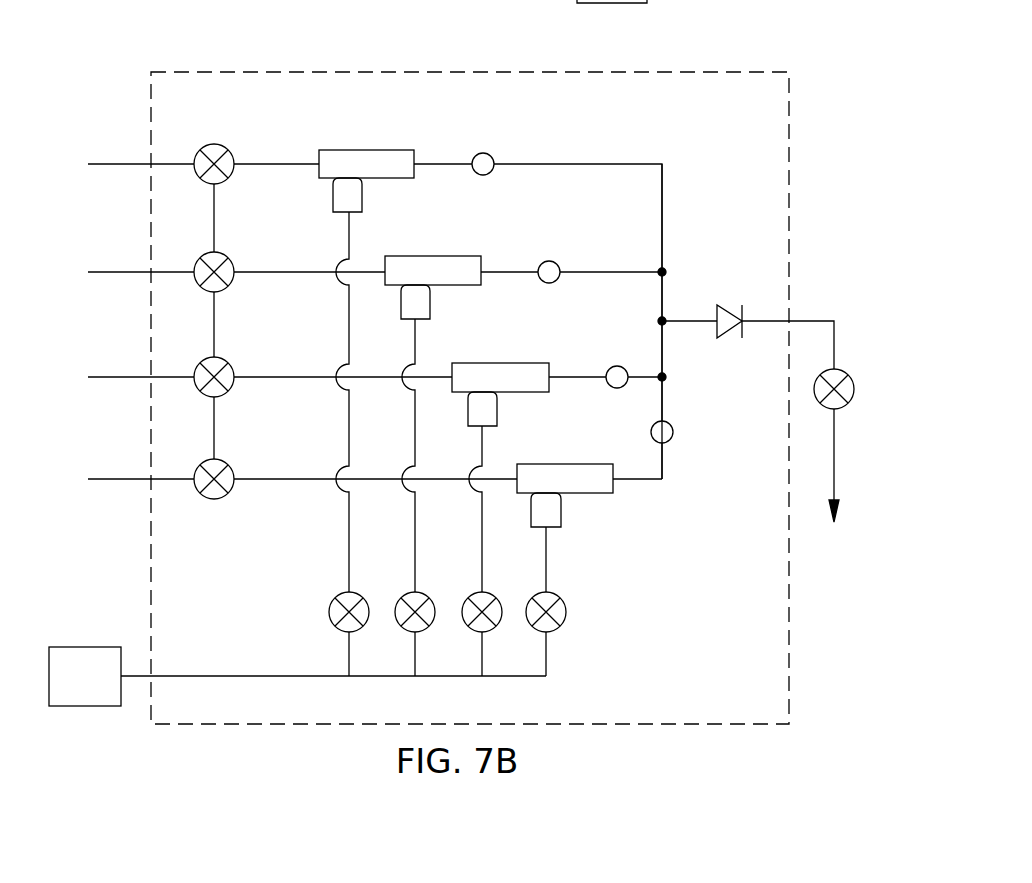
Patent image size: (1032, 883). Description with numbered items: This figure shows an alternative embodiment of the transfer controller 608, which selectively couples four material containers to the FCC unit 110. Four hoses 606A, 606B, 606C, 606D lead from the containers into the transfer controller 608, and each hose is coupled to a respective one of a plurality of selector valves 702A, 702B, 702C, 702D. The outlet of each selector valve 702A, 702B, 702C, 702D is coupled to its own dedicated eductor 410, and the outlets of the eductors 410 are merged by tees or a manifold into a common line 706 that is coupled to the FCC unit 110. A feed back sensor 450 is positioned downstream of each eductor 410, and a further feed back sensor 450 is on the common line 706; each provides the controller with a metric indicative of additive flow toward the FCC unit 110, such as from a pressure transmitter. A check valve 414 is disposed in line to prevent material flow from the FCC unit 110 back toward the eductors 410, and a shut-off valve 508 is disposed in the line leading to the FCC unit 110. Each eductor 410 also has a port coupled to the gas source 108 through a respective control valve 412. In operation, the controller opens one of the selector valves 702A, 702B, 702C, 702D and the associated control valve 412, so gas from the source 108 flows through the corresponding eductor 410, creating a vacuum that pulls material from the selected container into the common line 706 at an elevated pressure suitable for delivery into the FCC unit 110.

The transfer controller 608 is at (727, 70).
The hose 606A is at (105, 162).
The hose 606B is at (105, 270).
The hose 606C is at (105, 375).
The hose 606D is at (105, 477).
The selector valve 702A is at (214, 143).
The selector valve 702B is at (230, 257).
The selector valve 702C is at (230, 362).
The selector valve 702D is at (230, 464).
The eductor 410 is at (356, 150).
The control valve 412 is at (365, 594).
The feed back sensor 450 is at (485, 152).
The common line 706 is at (614, 162).
The check valve 414 is at (729, 303).
The shut-off valve 508 is at (852, 372).
The FCC unit 110 is at (835, 501).
The gas source 108 is at (67, 688).